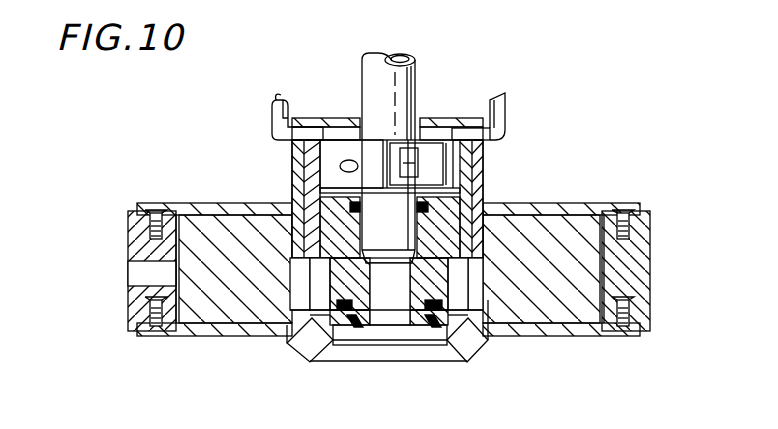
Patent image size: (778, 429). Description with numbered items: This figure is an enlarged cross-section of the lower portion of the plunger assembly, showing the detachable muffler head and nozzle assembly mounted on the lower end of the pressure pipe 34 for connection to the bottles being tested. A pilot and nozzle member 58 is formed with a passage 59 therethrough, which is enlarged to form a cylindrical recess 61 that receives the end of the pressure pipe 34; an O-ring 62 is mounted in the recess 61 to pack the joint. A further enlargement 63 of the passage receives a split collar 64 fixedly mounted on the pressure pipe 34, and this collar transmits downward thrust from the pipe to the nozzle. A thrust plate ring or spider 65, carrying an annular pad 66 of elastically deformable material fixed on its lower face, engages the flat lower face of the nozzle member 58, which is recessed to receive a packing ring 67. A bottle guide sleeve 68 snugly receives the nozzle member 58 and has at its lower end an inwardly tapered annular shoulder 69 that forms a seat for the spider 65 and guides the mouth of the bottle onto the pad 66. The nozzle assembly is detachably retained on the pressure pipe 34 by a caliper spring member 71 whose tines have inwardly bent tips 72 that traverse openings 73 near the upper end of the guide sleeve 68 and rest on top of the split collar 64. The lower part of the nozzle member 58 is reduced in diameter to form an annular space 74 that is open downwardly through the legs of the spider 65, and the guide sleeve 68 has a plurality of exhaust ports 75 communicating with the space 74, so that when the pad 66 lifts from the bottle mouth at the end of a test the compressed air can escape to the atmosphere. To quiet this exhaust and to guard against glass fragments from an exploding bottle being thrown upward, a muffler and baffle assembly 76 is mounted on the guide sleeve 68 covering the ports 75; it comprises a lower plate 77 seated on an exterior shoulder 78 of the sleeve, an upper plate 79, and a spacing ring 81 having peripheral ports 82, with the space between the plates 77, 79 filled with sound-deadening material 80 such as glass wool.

The pressure pipe 34 is at (414, 66).
The pilot and nozzle member 58 is at (470, 198).
The passage 59 is at (394, 318).
The cylindrical recess 61 is at (388, 262).
The O-ring 62 is at (348, 207).
The further enlargement 63 is at (458, 165).
The split collar 64 is at (333, 148).
The thrust plate ring or spider 65 is at (434, 312).
The annular pad 66 is at (365, 330).
The packing ring 67 is at (342, 312).
The bottle guide sleeve 68 is at (294, 152).
The inwardly tapered annular shoulder 69 is at (303, 348).
The caliper spring member 71 is at (504, 108).
The inwardly bent tips 72 is at (458, 130).
The openings 73 is at (298, 128).
The annular space 74 is at (483, 340).
The exhaust ports 75 is at (300, 296).
The muffler and baffle assembly 76 is at (668, 229).
The lower plate 77 is at (186, 330).
The exterior shoulder 78 is at (296, 318).
The upper plate 79 is at (195, 203).
The sound-deadening material 80 is at (578, 213).
The spacing ring 81 is at (132, 238).
The peripheral ports 82 is at (134, 270).